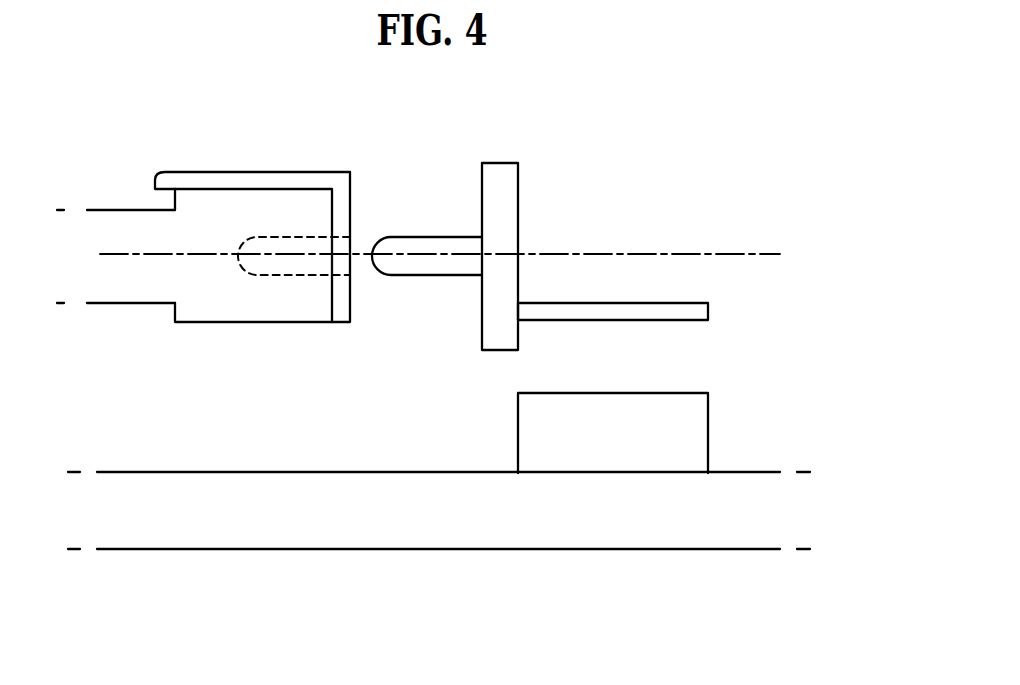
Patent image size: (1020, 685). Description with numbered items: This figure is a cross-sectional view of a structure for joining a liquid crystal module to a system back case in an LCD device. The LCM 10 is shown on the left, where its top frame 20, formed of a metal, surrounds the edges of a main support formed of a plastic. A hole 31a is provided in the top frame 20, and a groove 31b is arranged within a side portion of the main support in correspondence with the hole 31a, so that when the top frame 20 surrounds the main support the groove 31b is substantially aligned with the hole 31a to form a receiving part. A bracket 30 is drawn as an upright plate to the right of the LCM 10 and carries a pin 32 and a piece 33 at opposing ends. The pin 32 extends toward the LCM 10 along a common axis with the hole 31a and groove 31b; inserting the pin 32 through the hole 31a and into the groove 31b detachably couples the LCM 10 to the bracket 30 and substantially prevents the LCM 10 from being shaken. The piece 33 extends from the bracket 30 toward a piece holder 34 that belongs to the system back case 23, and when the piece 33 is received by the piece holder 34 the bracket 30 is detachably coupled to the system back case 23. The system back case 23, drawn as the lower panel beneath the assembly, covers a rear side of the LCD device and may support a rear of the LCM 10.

The LCM 10 is at (110, 222).
The top frame 20 is at (248, 178).
The system back case 23 is at (417, 532).
The bracket 30 is at (503, 170).
The hole 31a is at (341, 239).
The groove 31b is at (280, 273).
The pin 32 is at (415, 268).
The piece 33 is at (708, 310).
The piece holder 34 is at (705, 425).